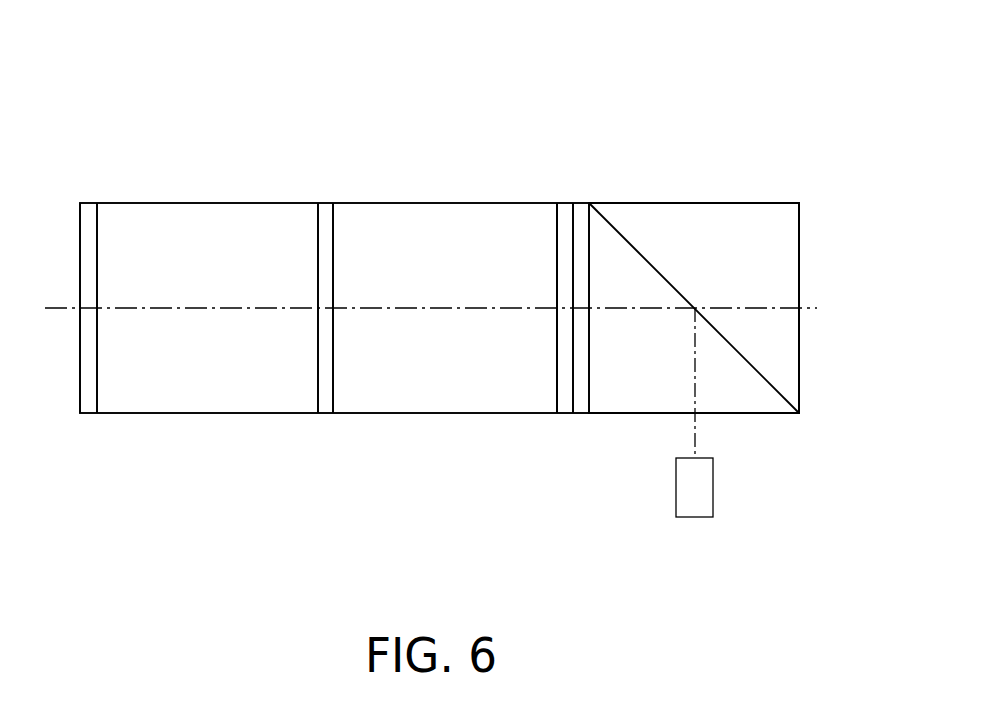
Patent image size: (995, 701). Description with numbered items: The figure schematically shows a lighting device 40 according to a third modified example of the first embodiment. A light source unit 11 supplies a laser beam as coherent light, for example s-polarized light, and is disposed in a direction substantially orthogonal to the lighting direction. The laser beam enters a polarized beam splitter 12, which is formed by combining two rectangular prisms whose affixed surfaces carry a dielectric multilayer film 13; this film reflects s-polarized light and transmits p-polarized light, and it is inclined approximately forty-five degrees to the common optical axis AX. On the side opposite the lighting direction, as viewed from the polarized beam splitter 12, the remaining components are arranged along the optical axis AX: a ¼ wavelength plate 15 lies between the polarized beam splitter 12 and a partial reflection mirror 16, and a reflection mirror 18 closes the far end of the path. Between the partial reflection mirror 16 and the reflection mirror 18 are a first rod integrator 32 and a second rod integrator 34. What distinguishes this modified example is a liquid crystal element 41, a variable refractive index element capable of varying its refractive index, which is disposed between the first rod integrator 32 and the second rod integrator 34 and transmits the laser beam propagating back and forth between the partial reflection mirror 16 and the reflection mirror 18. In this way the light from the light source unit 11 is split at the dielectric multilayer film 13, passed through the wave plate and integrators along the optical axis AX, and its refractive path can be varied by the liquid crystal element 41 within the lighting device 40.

The lighting device 40 is at (190, 168).
The reflection mirror 18 is at (91, 217).
The second rod integrator 34 is at (245, 213).
The liquid crystal element 41 is at (324, 212).
The first rod integrator 32 is at (424, 213).
The partial reflection mirror 16 is at (562, 212).
The ¼ wavelength plate 15 is at (583, 212).
The polarized beam splitter 12 is at (752, 212).
The dielectric multilayer film 13 is at (787, 393).
The light source unit 11 is at (697, 518).
The optical axis AX is at (64, 305).